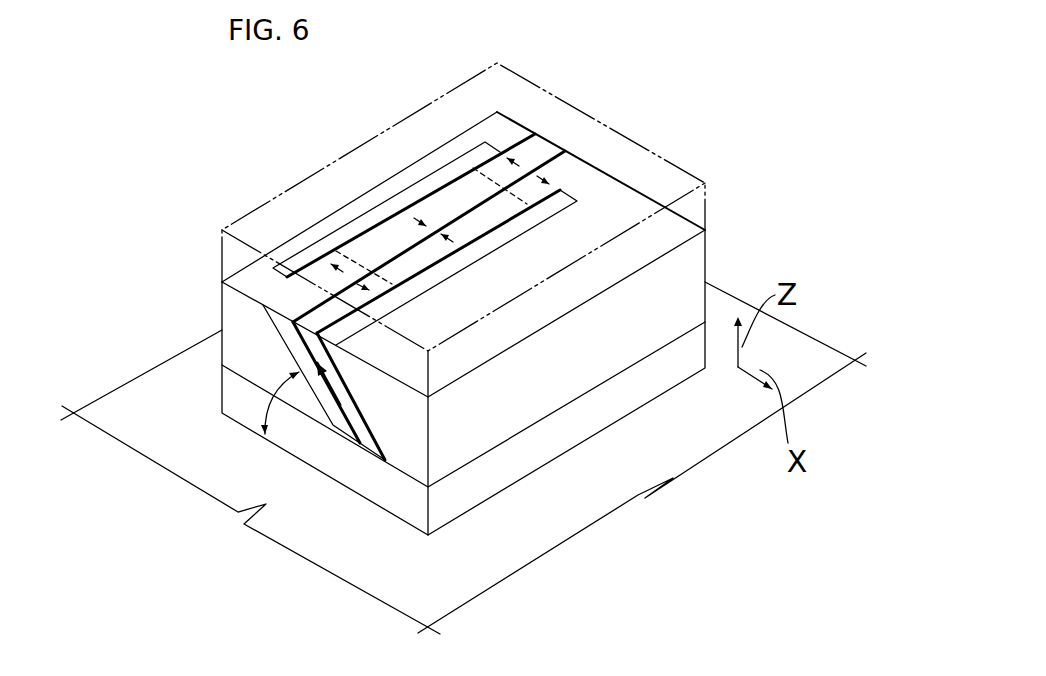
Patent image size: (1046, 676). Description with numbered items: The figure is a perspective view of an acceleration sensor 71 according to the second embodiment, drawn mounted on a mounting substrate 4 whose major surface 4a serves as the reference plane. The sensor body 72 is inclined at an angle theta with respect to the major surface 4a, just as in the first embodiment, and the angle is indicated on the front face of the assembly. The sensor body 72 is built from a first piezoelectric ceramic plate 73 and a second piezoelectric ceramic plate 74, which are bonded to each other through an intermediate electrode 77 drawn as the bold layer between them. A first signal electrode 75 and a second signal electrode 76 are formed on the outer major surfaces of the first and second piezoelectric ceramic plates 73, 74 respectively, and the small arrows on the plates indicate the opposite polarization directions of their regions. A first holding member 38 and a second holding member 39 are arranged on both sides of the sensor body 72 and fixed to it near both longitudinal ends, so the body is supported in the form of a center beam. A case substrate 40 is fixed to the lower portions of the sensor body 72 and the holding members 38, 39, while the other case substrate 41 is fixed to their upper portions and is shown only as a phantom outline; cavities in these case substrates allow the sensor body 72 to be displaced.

The acceleration sensor 71 is at (187, 167).
The mounting substrate 4 is at (147, 407).
The major surface 4a is at (705, 430).
The first holding member 38 is at (219, 308).
The second holding member 39 is at (470, 443).
The case substrate 40 is at (543, 450).
The case substrate 41 is at (688, 170).
The sensor body 72 is at (553, 140).
The first piezoelectric ceramic plate 73 is at (388, 272).
The second piezoelectric ceramic plate 74 is at (385, 243).
The first signal electrode 75 is at (556, 188).
The second signal electrode 76 is at (440, 190).
The intermediate electrode 77 is at (470, 202).